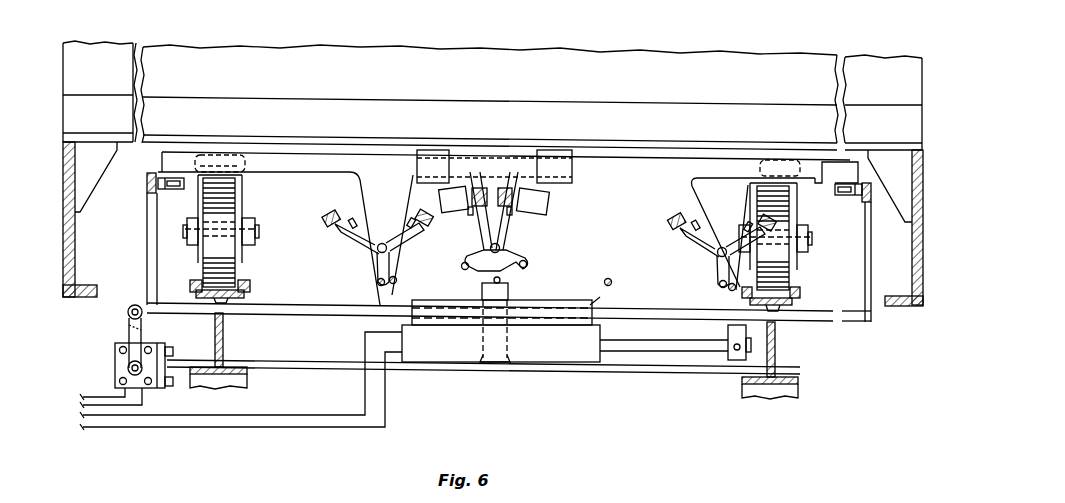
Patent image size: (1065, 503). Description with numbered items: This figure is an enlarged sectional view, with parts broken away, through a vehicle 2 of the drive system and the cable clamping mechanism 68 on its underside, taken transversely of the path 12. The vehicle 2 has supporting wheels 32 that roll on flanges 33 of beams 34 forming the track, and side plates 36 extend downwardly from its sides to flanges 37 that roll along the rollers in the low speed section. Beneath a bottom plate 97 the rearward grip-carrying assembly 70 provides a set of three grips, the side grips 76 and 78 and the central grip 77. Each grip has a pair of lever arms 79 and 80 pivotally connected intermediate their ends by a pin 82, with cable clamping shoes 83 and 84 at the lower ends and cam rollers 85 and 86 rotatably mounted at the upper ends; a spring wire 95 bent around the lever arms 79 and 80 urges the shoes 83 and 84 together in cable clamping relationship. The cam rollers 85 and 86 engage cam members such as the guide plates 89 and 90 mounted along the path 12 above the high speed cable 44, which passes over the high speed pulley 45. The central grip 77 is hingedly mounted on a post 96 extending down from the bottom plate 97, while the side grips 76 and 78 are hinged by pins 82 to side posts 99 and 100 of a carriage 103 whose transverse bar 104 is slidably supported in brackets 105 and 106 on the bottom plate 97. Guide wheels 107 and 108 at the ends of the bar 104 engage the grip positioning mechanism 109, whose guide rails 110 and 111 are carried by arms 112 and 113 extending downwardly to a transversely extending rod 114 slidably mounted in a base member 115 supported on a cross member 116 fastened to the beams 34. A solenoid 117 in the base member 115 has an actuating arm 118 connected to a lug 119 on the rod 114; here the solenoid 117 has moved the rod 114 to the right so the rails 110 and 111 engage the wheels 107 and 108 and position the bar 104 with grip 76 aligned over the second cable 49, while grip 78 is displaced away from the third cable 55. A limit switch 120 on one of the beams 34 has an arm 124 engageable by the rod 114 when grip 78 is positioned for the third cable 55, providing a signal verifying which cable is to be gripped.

The vehicle 2 is at (773, 58).
The path 12 is at (796, 404).
The supporting wheels 32 is at (215, 260).
The flanges 33 is at (200, 296).
The beams 34 is at (224, 336).
The side plates 36 is at (76, 240).
The flanges 37 is at (82, 298).
The high speed cable 44 is at (503, 282).
The high speed pulley 45 is at (478, 298).
The second cable 49 is at (380, 312).
The third cable 55 is at (611, 280).
The clamping mechanism 68 is at (626, 186).
The grip-carrying assembly 70 is at (592, 148).
The grip 76 is at (372, 275).
The central grip 77 is at (470, 258).
The grip 78 is at (713, 270).
The lever arm 79 is at (356, 232).
The lever arm 80 is at (397, 232).
The pin 82 is at (372, 258).
The cable clamping shoe 83 is at (378, 287).
The cable clamping shoe 84 is at (398, 283).
The cam roller 85 is at (480, 190).
The cam roller 86 is at (507, 188).
The guide plate 89 is at (548, 196).
The guide plate 90 is at (442, 196).
The spring wire 95 is at (352, 219).
The post 96 is at (495, 156).
The bottom plate 97 is at (684, 158).
The side post 99 is at (378, 163).
The side post 100 is at (742, 162).
The carriage 103 is at (712, 160).
The transverse bar 104 is at (634, 163).
The bracket 105 is at (428, 157).
The bracket 106 is at (553, 157).
The guide wheel 107 is at (170, 178).
The guide wheel 108 is at (853, 181).
The grip positioning mechanism 109 is at (618, 380).
The guide rail 110 is at (147, 185).
The guide rail 111 is at (872, 214).
The arm 112 is at (147, 204).
The arm 113 is at (872, 255).
The rod 114 is at (300, 303).
The base member 115 is at (600, 297).
The cross member 116 is at (672, 346).
The solenoid 117 is at (548, 352).
The actuating arm 118 is at (648, 360).
The lug 119 is at (732, 358).
The limit switch 120 is at (115, 366).
The arm 124 is at (128, 330).